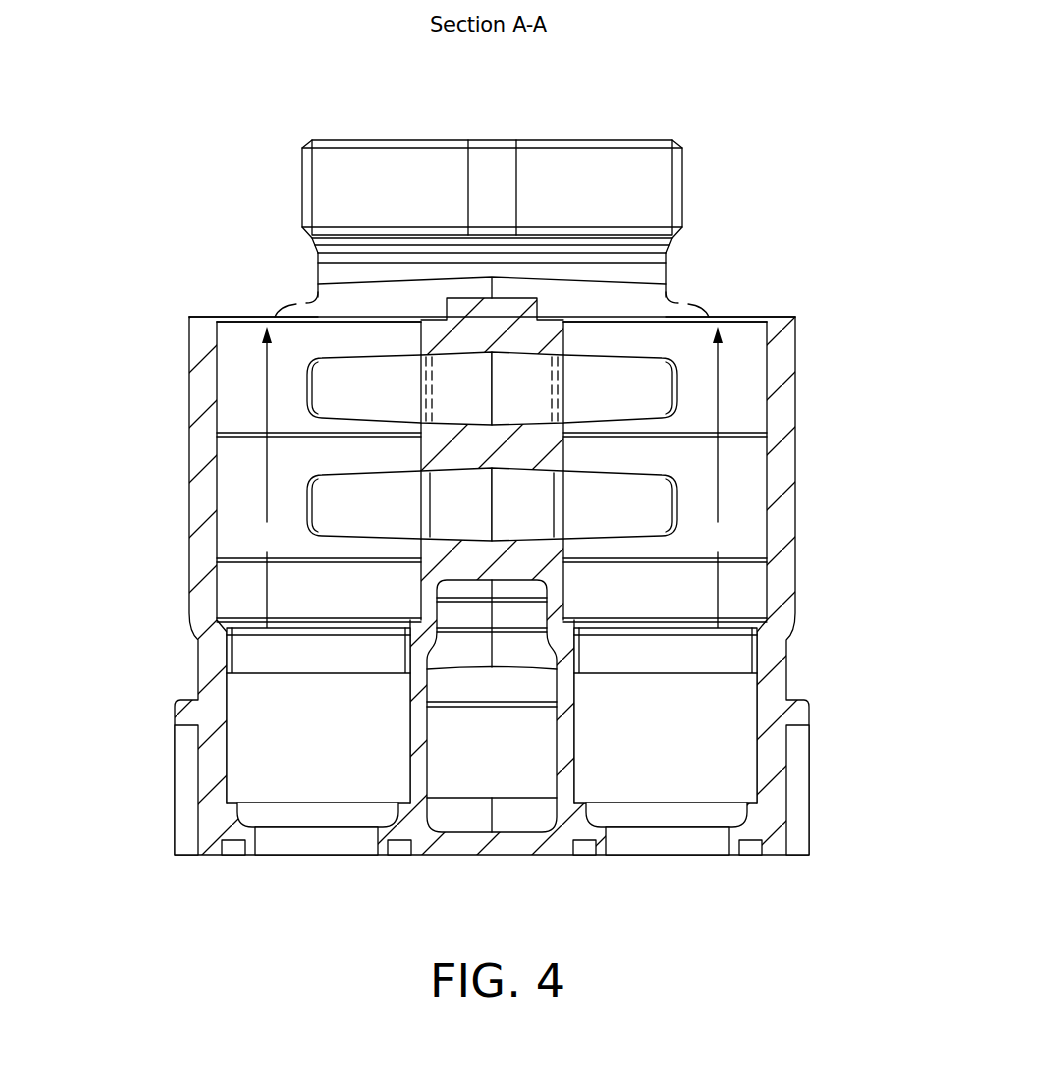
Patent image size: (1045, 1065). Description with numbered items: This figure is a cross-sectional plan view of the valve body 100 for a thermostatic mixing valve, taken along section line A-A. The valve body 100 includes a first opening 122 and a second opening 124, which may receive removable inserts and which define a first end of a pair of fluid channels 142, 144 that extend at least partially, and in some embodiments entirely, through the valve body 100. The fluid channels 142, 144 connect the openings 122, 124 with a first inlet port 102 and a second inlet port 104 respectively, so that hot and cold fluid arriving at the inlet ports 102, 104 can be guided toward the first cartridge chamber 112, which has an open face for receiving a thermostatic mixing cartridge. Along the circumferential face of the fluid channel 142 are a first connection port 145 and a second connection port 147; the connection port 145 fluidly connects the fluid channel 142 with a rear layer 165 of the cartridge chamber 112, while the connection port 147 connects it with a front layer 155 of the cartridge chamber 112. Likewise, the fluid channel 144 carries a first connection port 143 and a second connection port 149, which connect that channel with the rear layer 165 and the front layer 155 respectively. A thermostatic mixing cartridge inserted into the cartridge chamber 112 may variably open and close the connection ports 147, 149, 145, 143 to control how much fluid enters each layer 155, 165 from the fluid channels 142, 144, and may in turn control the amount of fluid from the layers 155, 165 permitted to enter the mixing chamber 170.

The valve body 100 is at (118, 250).
The first cartridge chamber 112 is at (445, 140).
The first opening 122 is at (247, 317).
The second opening 124 is at (737, 317).
The front layer 155 is at (175, 322).
The rear layer 165 is at (175, 440).
The second connection port 147 is at (336, 388).
The second connection port 149 is at (649, 388).
The first connection port 145 is at (336, 504).
The first connection port 143 is at (649, 504).
The fluid channel 142 is at (267, 562).
The fluid channel 144 is at (718, 562).
The first inlet port 102 is at (295, 857).
The second inlet port 104 is at (680, 857).
The mixing chamber 170 is at (510, 775).